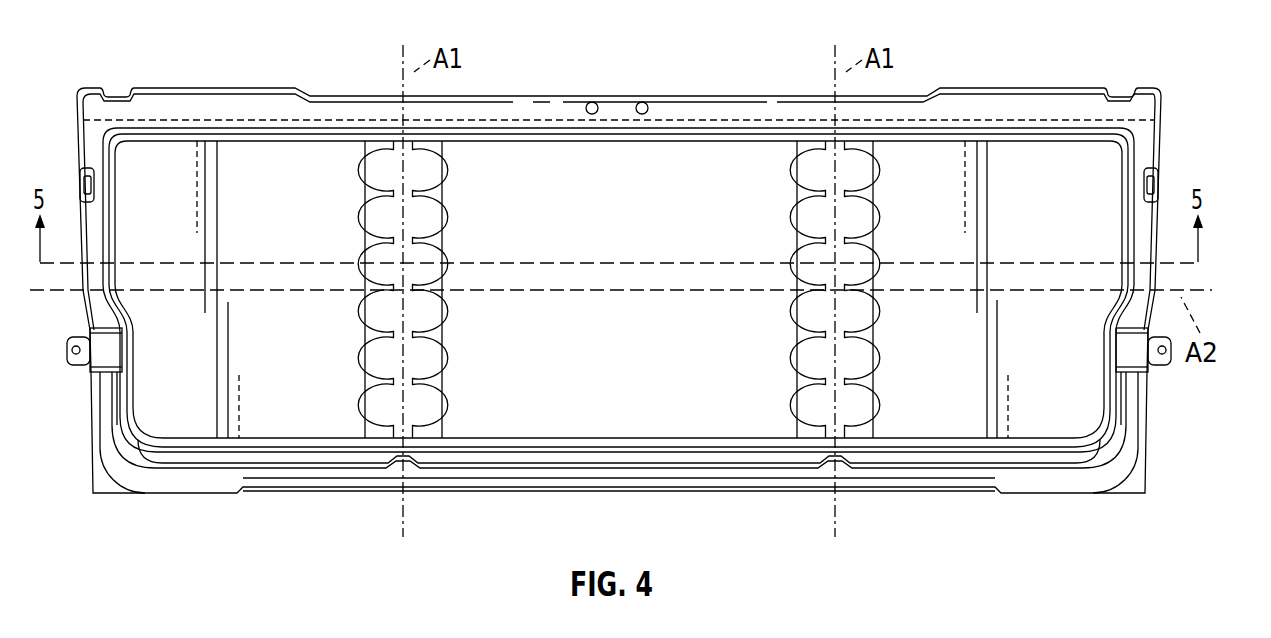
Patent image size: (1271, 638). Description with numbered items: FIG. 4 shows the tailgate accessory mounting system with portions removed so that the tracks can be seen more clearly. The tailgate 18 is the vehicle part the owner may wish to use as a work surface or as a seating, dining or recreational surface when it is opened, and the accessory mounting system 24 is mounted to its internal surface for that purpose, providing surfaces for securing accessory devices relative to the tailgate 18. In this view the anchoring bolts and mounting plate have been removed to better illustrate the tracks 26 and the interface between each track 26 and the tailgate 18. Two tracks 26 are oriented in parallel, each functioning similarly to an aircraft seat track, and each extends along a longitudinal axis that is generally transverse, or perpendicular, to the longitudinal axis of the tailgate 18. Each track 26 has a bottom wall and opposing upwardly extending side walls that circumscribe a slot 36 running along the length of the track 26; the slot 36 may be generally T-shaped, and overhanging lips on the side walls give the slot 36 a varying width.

The tailgate 18 is at (1060, 92).
The accessory mounting system 24 is at (735, 152).
The track 26 is at (450, 335).
The slot 36 is at (418, 410).